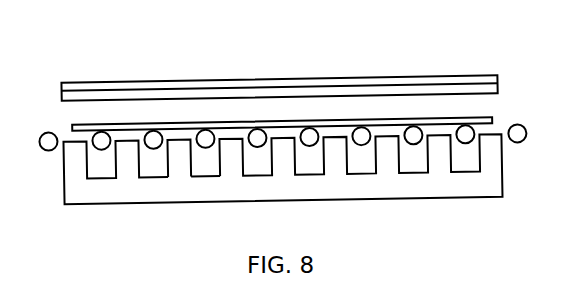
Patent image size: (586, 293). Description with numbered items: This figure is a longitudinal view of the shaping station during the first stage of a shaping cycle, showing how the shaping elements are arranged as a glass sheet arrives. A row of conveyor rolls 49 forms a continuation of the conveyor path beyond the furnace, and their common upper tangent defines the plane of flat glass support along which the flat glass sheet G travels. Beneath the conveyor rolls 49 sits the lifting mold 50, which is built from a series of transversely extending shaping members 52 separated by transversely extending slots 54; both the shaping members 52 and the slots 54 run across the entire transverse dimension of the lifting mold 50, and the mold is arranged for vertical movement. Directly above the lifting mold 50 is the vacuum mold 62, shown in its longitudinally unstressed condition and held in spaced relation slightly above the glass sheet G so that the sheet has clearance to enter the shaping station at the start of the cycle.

The vacuum mold 62 is at (400, 75).
The flat glass sheet G is at (486, 117).
The conveyor rolls 49 is at (515, 143).
The lifting mold 50 is at (384, 199).
The shaping members 52 is at (182, 140).
The slots 54 is at (209, 163).